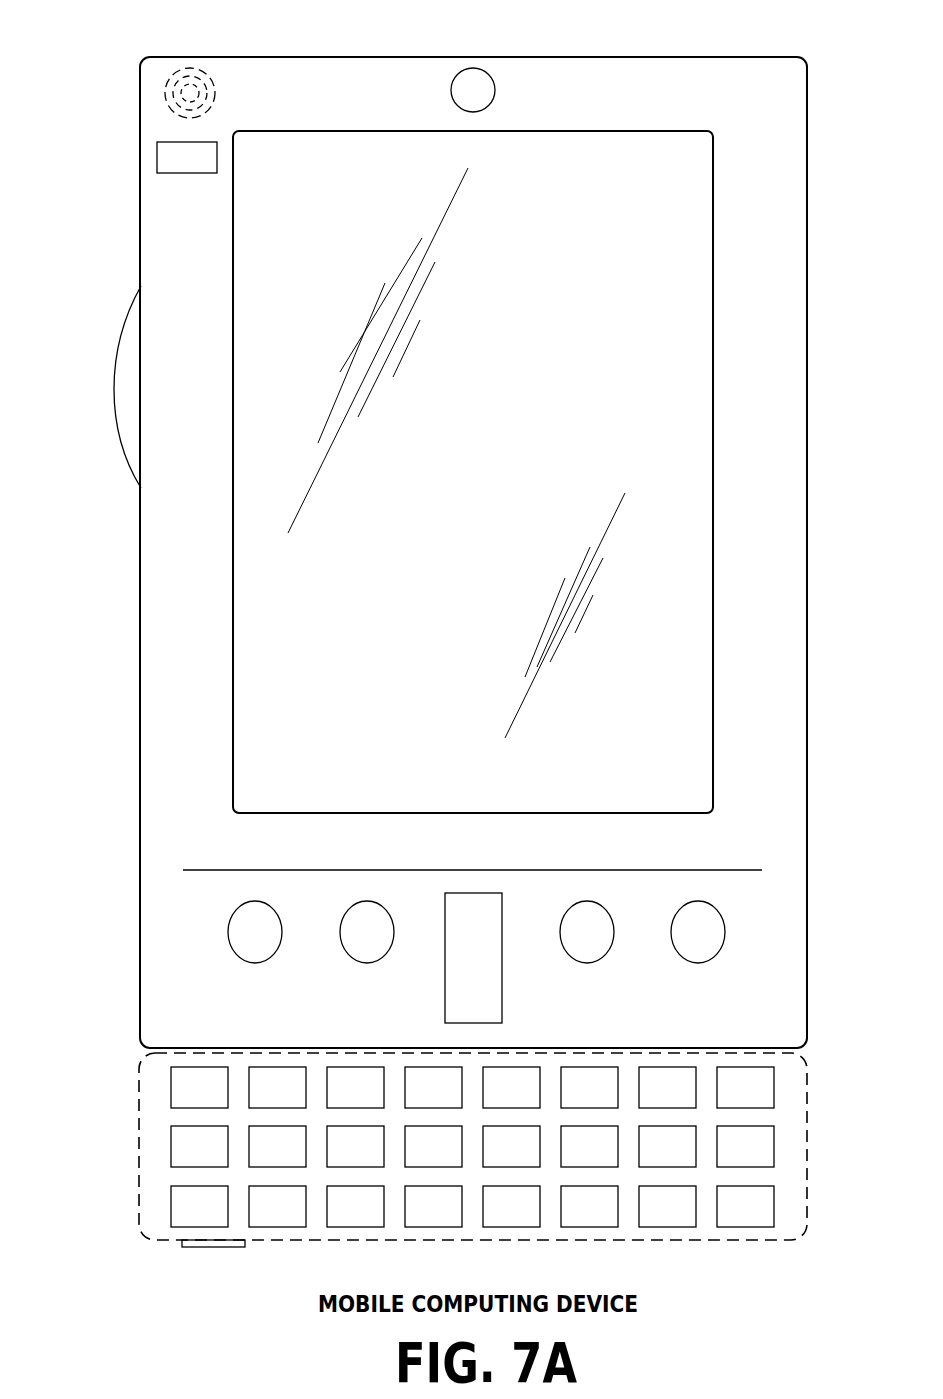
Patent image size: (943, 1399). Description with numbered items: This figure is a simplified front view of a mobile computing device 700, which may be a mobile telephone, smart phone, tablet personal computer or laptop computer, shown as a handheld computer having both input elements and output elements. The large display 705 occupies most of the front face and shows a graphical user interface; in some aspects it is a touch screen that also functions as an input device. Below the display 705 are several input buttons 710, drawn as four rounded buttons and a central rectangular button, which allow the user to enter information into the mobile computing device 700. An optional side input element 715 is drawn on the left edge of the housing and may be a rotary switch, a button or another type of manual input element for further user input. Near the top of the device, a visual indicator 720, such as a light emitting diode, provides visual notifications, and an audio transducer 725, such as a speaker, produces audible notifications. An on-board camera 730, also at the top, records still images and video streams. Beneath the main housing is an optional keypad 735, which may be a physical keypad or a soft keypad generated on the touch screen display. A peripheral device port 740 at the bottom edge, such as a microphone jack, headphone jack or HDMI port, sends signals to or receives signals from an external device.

The mobile computing device 700 is at (773, 57).
The display 705 is at (256, 649).
The input buttons 710 is at (258, 963).
The side input element 715 is at (119, 390).
The visual indicator 720 is at (157, 157).
The audio transducer 725 is at (162, 96).
The on-board camera 730 is at (475, 68).
The keypad 735 is at (150, 1144).
The peripheral device port 740 is at (190, 1250).